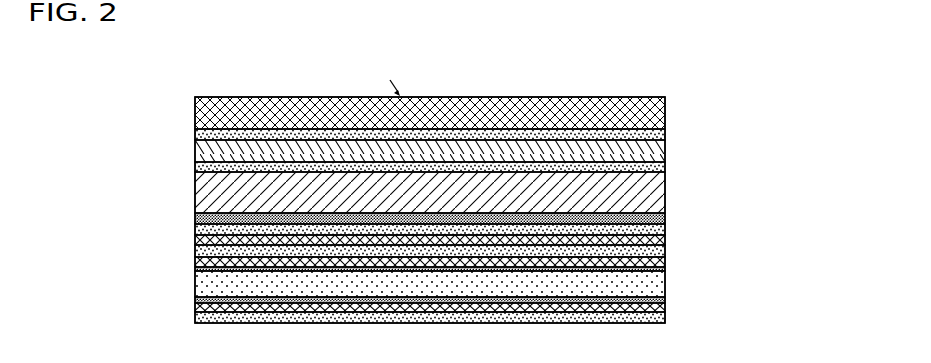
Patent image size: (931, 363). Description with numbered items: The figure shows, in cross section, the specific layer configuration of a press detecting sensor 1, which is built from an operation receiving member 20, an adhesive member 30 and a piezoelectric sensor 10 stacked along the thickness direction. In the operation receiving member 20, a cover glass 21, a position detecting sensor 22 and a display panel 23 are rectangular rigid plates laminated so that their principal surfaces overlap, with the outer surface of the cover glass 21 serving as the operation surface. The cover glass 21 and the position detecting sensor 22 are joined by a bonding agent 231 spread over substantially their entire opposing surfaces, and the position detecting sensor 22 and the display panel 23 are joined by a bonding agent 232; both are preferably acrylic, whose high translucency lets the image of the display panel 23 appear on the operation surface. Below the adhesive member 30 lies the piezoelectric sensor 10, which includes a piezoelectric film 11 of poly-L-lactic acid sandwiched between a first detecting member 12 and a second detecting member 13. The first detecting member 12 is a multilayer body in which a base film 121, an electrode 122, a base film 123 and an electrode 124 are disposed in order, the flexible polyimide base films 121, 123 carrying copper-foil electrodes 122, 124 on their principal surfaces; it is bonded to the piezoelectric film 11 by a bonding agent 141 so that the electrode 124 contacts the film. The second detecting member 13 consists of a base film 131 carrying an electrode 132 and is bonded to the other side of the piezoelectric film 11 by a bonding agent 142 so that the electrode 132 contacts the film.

The press detecting sensor 1 is at (203, 87).
The piezoelectric sensor 10 is at (781, 223).
The piezoelectric film 11 is at (665, 286).
The first detecting member 12 is at (492, 246).
The base film 121 is at (665, 230).
The electrode 122 is at (665, 241).
The base film 123 is at (665, 251).
The electrode 124 is at (665, 262).
The second detecting member 13 is at (473, 328).
The base film 131 is at (709, 320).
The electrode 132 is at (665, 308).
The bonding agent 141 is at (665, 272).
The bonding agent 142 is at (665, 300).
The operation receiving member 20 is at (475, 154).
The cover glass 21 is at (665, 103).
The position detecting sensor 22 is at (665, 151).
The display panel 23 is at (445, 192).
The bonding agent 231 is at (665, 134).
The bonding agent 232 is at (665, 168).
The adhesive member 30 is at (665, 216).